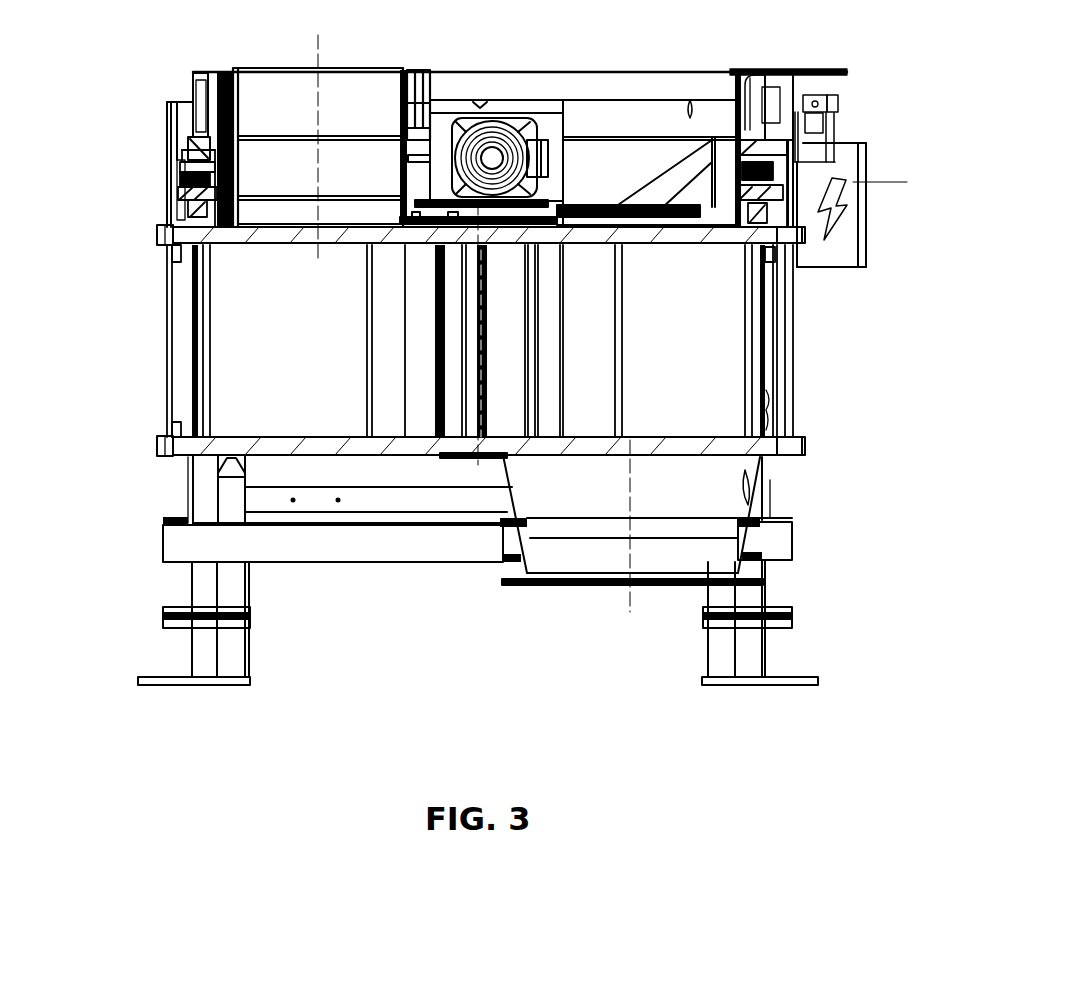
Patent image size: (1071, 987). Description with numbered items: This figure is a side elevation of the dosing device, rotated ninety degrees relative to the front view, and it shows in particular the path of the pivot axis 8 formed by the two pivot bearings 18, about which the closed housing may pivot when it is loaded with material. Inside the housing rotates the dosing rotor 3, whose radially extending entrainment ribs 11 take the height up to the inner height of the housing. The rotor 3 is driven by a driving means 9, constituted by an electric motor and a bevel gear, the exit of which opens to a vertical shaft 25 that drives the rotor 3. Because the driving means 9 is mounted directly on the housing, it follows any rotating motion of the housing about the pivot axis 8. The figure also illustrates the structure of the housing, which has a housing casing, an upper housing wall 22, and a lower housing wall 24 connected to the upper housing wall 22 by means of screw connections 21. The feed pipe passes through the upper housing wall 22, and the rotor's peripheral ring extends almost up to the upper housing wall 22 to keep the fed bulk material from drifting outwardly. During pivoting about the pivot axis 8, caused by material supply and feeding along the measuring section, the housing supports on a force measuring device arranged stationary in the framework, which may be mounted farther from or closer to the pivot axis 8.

The dosing rotor 3 is at (727, 352).
The pivot axis 8 is at (167, 174).
The driving means 9 is at (571, 127).
The entrainment ribs 11 is at (610, 422).
The pivot bearings 18 is at (172, 176).
The screw connections 21 is at (162, 338).
The upper housing wall 22 is at (157, 234).
The lower housing wall 24 is at (154, 445).
The vertical shaft 25 is at (473, 458).